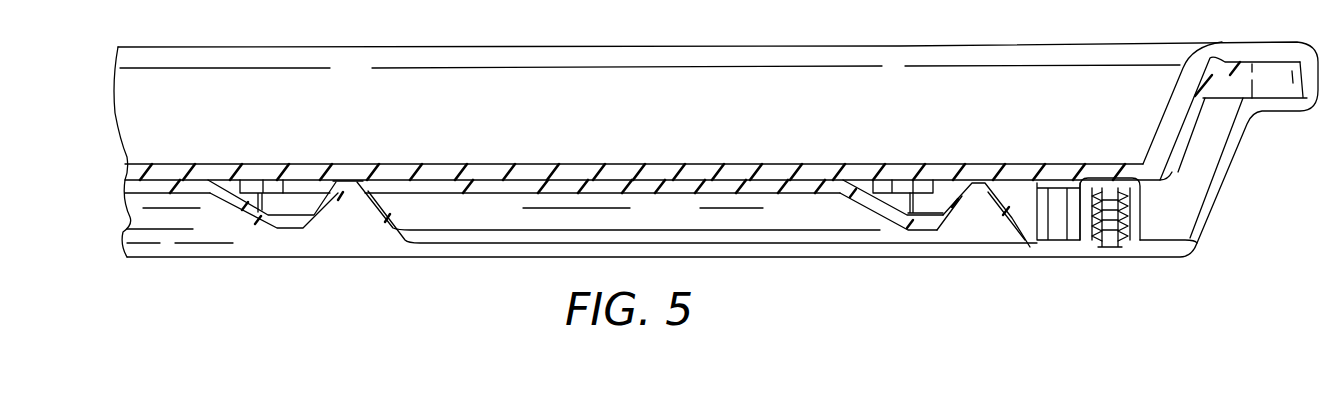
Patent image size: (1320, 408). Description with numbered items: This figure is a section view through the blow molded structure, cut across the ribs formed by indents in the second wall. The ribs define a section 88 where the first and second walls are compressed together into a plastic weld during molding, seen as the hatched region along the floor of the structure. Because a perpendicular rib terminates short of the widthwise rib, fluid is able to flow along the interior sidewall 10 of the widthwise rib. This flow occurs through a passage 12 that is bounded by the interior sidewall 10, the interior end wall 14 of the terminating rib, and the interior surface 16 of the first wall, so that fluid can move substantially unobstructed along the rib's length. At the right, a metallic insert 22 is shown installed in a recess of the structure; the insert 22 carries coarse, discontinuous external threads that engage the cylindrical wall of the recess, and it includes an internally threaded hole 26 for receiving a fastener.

The section 88 is at (577, 178).
The interior sidewall 10 is at (948, 187).
The passage 12 is at (930, 198).
The interior end wall 14 is at (882, 197).
The interior surface 16 is at (938, 190).
The metallic insert 22 is at (1130, 248).
The internally threaded hole 26 is at (1112, 225).